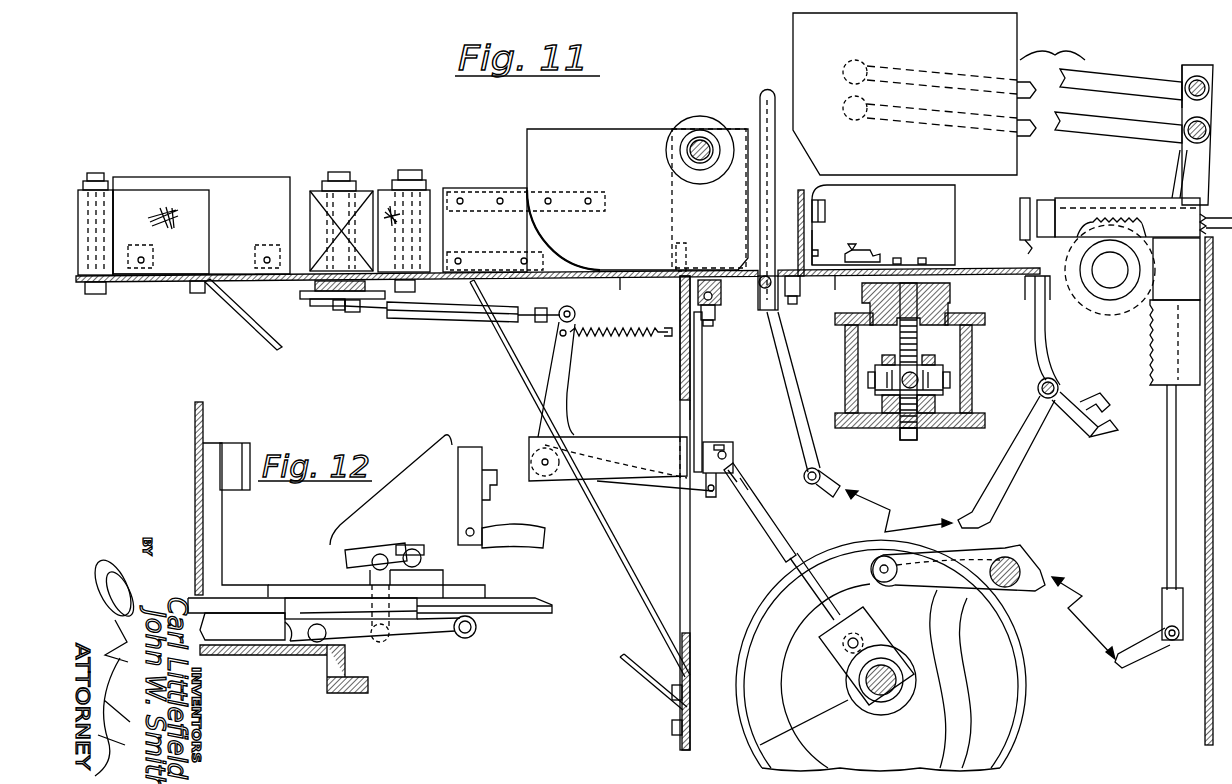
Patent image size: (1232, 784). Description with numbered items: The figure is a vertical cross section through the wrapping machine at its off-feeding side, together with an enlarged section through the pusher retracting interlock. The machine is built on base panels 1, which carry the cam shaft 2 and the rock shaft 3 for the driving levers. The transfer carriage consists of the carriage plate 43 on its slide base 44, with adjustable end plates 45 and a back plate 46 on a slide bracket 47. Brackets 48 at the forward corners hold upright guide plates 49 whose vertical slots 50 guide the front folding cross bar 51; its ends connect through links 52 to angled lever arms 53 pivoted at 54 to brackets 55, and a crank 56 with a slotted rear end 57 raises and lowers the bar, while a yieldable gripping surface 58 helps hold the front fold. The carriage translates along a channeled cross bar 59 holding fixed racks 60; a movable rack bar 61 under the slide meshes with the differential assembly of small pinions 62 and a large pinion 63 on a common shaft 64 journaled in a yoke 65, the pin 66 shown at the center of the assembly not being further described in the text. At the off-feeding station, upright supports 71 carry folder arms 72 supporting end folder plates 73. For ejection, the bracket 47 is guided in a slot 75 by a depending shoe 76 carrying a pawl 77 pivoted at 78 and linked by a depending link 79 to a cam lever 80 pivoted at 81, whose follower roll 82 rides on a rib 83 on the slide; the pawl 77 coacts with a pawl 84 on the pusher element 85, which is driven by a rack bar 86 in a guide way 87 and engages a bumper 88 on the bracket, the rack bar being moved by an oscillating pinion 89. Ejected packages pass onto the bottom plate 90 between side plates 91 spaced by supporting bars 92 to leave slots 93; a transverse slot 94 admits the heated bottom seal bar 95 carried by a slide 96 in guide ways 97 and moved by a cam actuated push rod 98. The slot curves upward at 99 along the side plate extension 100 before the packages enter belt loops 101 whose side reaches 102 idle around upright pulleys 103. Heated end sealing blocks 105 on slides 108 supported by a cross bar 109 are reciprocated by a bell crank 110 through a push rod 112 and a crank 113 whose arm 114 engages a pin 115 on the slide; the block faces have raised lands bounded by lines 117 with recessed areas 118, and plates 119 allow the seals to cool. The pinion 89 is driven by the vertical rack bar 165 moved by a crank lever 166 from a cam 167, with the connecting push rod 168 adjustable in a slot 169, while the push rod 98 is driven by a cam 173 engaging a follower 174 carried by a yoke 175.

In FIG. 11, the base or body panels 1 is at (683, 588).
In FIG. 11, the cam shaft 2 is at (881, 697).
In FIG. 11, the rock shaft 3 is at (1005, 553).
In FIG. 11, the carriage plate 43 is at (970, 268).
In FIG. 12, the carriage plate 43 is at (530, 598).
In FIG. 11, the slide base 44 is at (950, 285).
In FIG. 12, the slide base 44 is at (355, 692).
In FIG. 11, the end plates 45 is at (955, 205).
In FIG. 11, the back plate 46 is at (800, 190).
In FIG. 12, the back plate 46 is at (196, 435).
In FIG. 11, the slide bracket 47 is at (828, 262).
In FIG. 12, the slide bracket 47 is at (215, 530).
In FIG. 11, the brackets 48 is at (800, 290).
In FIG. 11, the upright guide plates 49 is at (760, 92).
In FIG. 11, the vertical slots 50 is at (768, 112).
In FIG. 11, the front folding cross bar 51 is at (760, 272).
In FIG. 11, the links 52 is at (783, 368).
In FIG. 11, the angled lever arms 53 is at (995, 488).
In FIG. 11, the pivot 54 is at (1052, 405).
In FIG. 11, the brackets 55 is at (1040, 348).
In FIG. 11, the crank 56 is at (1090, 435).
In FIG. 11, the slotted rear end 57 is at (1102, 400).
In FIG. 11, the yieldable gripping surface 58 is at (765, 290).
In FIG. 11, the channeled cross bar 59 is at (850, 372).
In FIG. 11, the fixed racks 60 is at (888, 413).
In FIG. 11, the movable rack bar 61 is at (900, 310).
In FIG. 11, the side pinions 62 is at (930, 358).
In FIG. 11, the large pinion 63 is at (908, 440).
In FIG. 11, the common shaft 64 is at (950, 378).
In FIG. 11, the yoke 65 is at (950, 388).
In FIG. 11, the pin 66 is at (900, 380).
In FIG. 11, the upright supports 71 is at (1192, 68).
In FIG. 11, the folder arms 72 is at (1128, 122).
In FIG. 11, the end folder plates 73 is at (808, 30).
In FIG. 12, the slot 75 is at (500, 600).
In FIG. 12, the depending shoe 76 is at (303, 603).
In FIG. 11, the pawl 77 is at (858, 255).
In FIG. 12, the pawl 77 is at (355, 555).
In FIG. 12, the pivot 78 is at (417, 552).
In FIG. 12, the depending link 79 is at (378, 580).
In FIG. 12, the cam lever 80 is at (422, 633).
In FIG. 12, the pivot 81 is at (468, 638).
In FIG. 12, the follower roll 82 is at (312, 642).
In FIG. 12, the rib 83 is at (237, 655).
In FIG. 11, the pawl 84 is at (1028, 240).
In FIG. 12, the pawl 84 is at (528, 540).
In FIG. 11, the pusher element 85 is at (1025, 198).
In FIG. 12, the pusher element 85 is at (475, 447).
In FIG. 11, the rack bar 86 is at (1112, 222).
In FIG. 11, the guide way 87 is at (1152, 200).
In FIG. 11, the bumper 88 is at (825, 205).
In FIG. 12, the bumper 88 is at (238, 460).
In FIG. 11, the oscillating pinion 89 is at (1090, 310).
In FIG. 11, the bottom plate 90 is at (620, 277).
In FIG. 11, the side plates 91 is at (610, 130).
In FIG. 11, the supporting bars 92 is at (502, 188).
In FIG. 11, the slots 93 is at (630, 270).
In FIG. 11, the transverse slot 94 is at (703, 270).
In FIG. 11, the bottom seal bar 95 is at (722, 298).
In FIG. 11, the slide 96 is at (702, 422).
In FIG. 11, the guide ways 97 is at (678, 372).
In FIG. 11, the push rod 98 is at (763, 508).
In FIG. 11, the upward curve 99 is at (565, 255).
In FIG. 11, the side plate extension 100 is at (462, 200).
In FIG. 11, the belt loops 101 is at (125, 188).
In FIG. 11, the side reaches 102 is at (205, 220).
In FIG. 11, the upright pulleys 103 is at (97, 180).
In FIG. 11, the end sealing blocks 105 is at (345, 190).
In FIG. 11, the slides 108 is at (318, 285).
In FIG. 11, the cross bar 109 is at (330, 293).
In FIG. 11, the bell crank 110 is at (338, 297).
In FIG. 11, the push rod 112 is at (430, 312).
In FIG. 11, the crank 113 is at (560, 368).
In FIG. 11, the arm 114 is at (657, 480).
In FIG. 11, the pin 115 is at (714, 498).
In FIG. 11, the lines 117 is at (353, 218).
In FIG. 11, the recessed areas 118 is at (318, 205).
In FIG. 11, the plates 119 is at (215, 178).
In FIG. 11, the vertical rack bar 165 is at (1157, 328).
In FIG. 11, the crank lever 166 is at (1075, 598).
In FIG. 11, the cam 167 is at (1005, 710).
In FIG. 11, the push rod 168 is at (1168, 522).
In FIG. 11, the slot 169 is at (1145, 652).
In FIG. 11, the cam 173 is at (760, 745).
In FIG. 11, the follower 174 is at (835, 638).
In FIG. 11, the yoke 175 is at (835, 660).